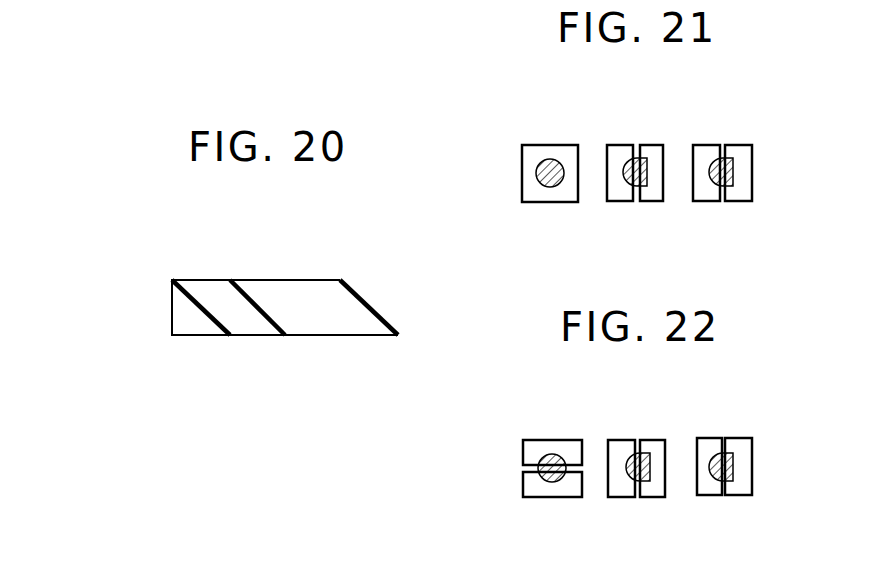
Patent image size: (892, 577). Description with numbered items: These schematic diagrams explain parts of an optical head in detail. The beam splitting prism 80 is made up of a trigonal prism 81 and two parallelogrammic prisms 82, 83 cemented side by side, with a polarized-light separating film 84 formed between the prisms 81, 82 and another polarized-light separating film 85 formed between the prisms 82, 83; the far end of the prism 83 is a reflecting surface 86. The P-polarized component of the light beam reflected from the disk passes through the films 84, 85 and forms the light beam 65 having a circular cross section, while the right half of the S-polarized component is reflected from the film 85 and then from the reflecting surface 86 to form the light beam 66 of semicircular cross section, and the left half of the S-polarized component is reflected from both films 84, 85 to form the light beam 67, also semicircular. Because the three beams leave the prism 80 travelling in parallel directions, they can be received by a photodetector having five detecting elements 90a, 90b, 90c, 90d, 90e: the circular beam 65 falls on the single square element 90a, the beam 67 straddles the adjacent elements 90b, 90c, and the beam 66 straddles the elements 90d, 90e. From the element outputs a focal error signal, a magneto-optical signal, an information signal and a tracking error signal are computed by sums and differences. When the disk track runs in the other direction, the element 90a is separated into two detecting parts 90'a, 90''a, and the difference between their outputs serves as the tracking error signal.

In FIG. 20, the beam splitting prism 80 is at (212, 256).
In FIG. 20, the trigonal prism 81 is at (193, 323).
In FIG. 20, the parallelogrammic prism 82 is at (253, 323).
In FIG. 20, the parallelogrammic prism 83 is at (333, 320).
In FIG. 20, the polarized-light separating film 84 is at (193, 298).
In FIG. 20, the polarized-light separating film 85 is at (248, 298).
In FIG. 20, the reflecting surface 86 is at (367, 302).
In FIG. 21, the light beam 65 is at (543, 159).
In FIG. 22, the light beam 65 is at (555, 455).
In FIG. 21, the light beam 66 is at (724, 158).
In FIG. 22, the light beam 66 is at (723, 455).
In FIG. 21, the light beam 67 is at (637, 159).
In FIG. 22, the light beam 67 is at (642, 455).
In FIG. 21, the detecting element 90a is at (540, 203).
In FIG. 21, the detecting element 90b is at (615, 202).
In FIG. 22, the detecting element 90b is at (617, 497).
In FIG. 21, the detecting element 90c is at (652, 202).
In FIG. 22, the detecting element 90c is at (655, 497).
In FIG. 21, the detecting element 90d is at (708, 202).
In FIG. 22, the detecting element 90d is at (712, 495).
In FIG. 21, the detecting element 90e is at (743, 202).
In FIG. 22, the detecting element 90e is at (743, 495).
In FIG. 22, the detecting part 90'a is at (523, 444).
In FIG. 22, the detecting part 90''a is at (522, 491).